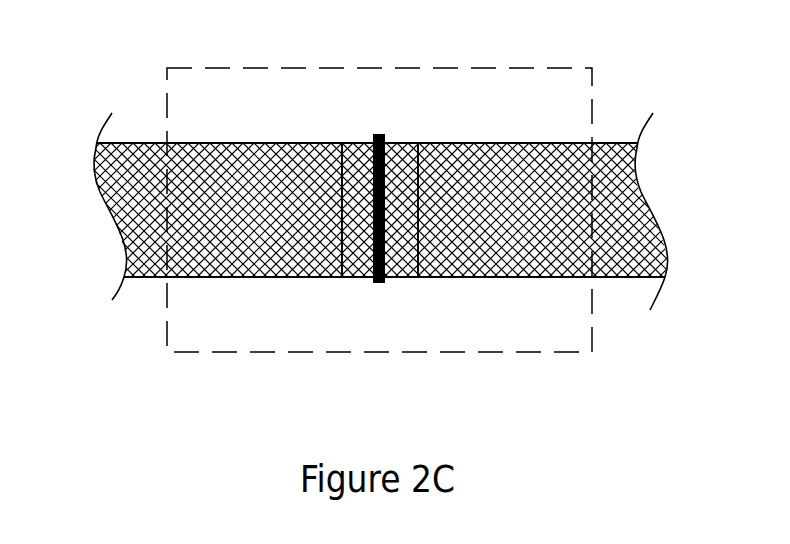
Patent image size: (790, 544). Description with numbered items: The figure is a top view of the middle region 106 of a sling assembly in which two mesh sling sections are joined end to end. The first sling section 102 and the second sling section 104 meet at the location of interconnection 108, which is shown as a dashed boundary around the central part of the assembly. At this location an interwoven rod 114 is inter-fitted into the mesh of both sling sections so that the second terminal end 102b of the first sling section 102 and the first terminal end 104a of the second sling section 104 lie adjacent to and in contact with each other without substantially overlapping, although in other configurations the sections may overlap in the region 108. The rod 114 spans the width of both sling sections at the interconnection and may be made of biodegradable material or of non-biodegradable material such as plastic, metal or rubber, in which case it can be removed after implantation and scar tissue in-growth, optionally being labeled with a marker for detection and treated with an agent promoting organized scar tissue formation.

The first sling section 102 is at (137, 145).
The second sling section 104 is at (610, 142).
The middle region 106 is at (592, 344).
The location of interconnection 108 is at (362, 165).
The first terminal end of the second sling section 104a is at (330, 276).
The second terminal end of the first sling section 102b is at (430, 276).
The interwoven rod 114 is at (382, 284).